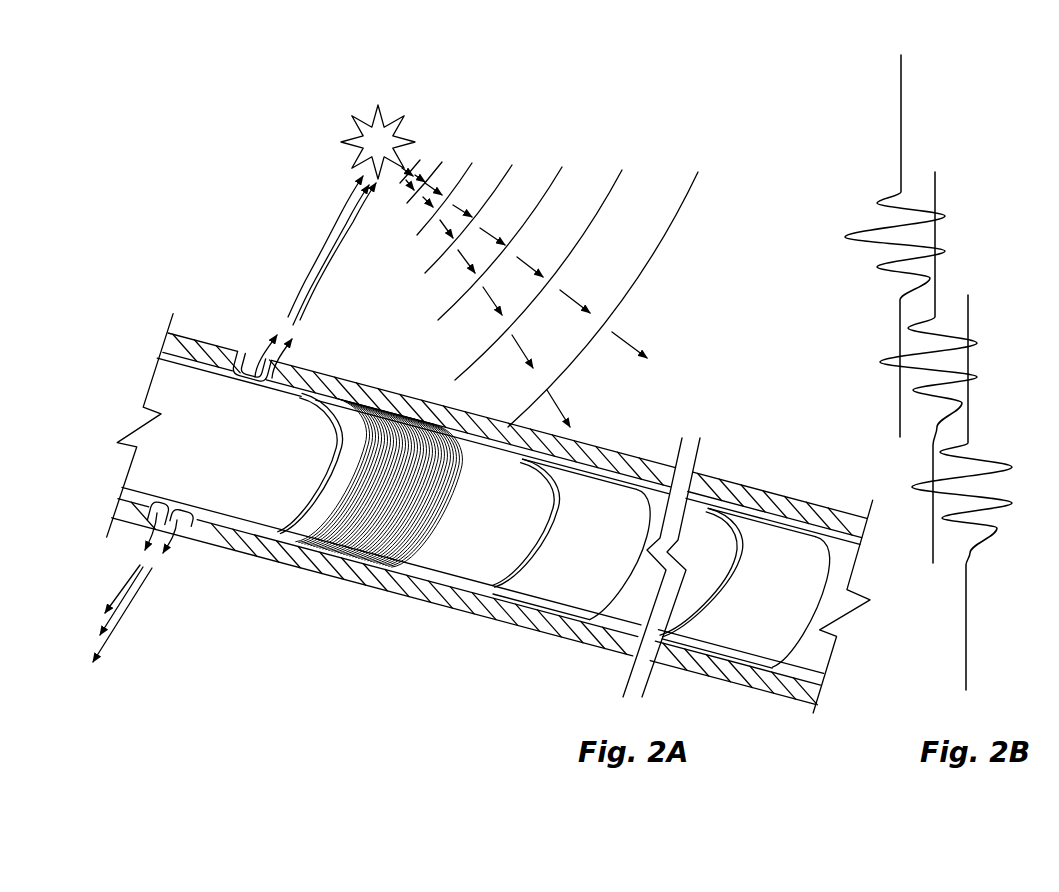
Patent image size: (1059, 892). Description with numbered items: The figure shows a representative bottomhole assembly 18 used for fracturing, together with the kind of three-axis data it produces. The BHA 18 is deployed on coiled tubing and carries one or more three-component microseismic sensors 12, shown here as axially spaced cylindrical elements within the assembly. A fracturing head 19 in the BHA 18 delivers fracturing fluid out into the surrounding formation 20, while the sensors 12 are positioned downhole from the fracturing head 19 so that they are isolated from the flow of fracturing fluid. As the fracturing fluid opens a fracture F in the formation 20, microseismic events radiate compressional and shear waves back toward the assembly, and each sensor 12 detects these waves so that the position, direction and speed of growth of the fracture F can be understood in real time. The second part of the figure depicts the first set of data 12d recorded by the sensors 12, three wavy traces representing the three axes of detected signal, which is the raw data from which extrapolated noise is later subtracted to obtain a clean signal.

In FIG. 2A, the 3-component microseismic sensor 12 is at (592, 487).
In FIG. 2B, the first set of data 12d is at (901, 117).
In FIG. 2A, the bottomhole assembly 18 is at (215, 492).
In FIG. 2A, the fracturing head 19 is at (255, 360).
In FIG. 2A, the formation 20 is at (384, 317).
In FIG. 2A, the fracture F is at (396, 136).